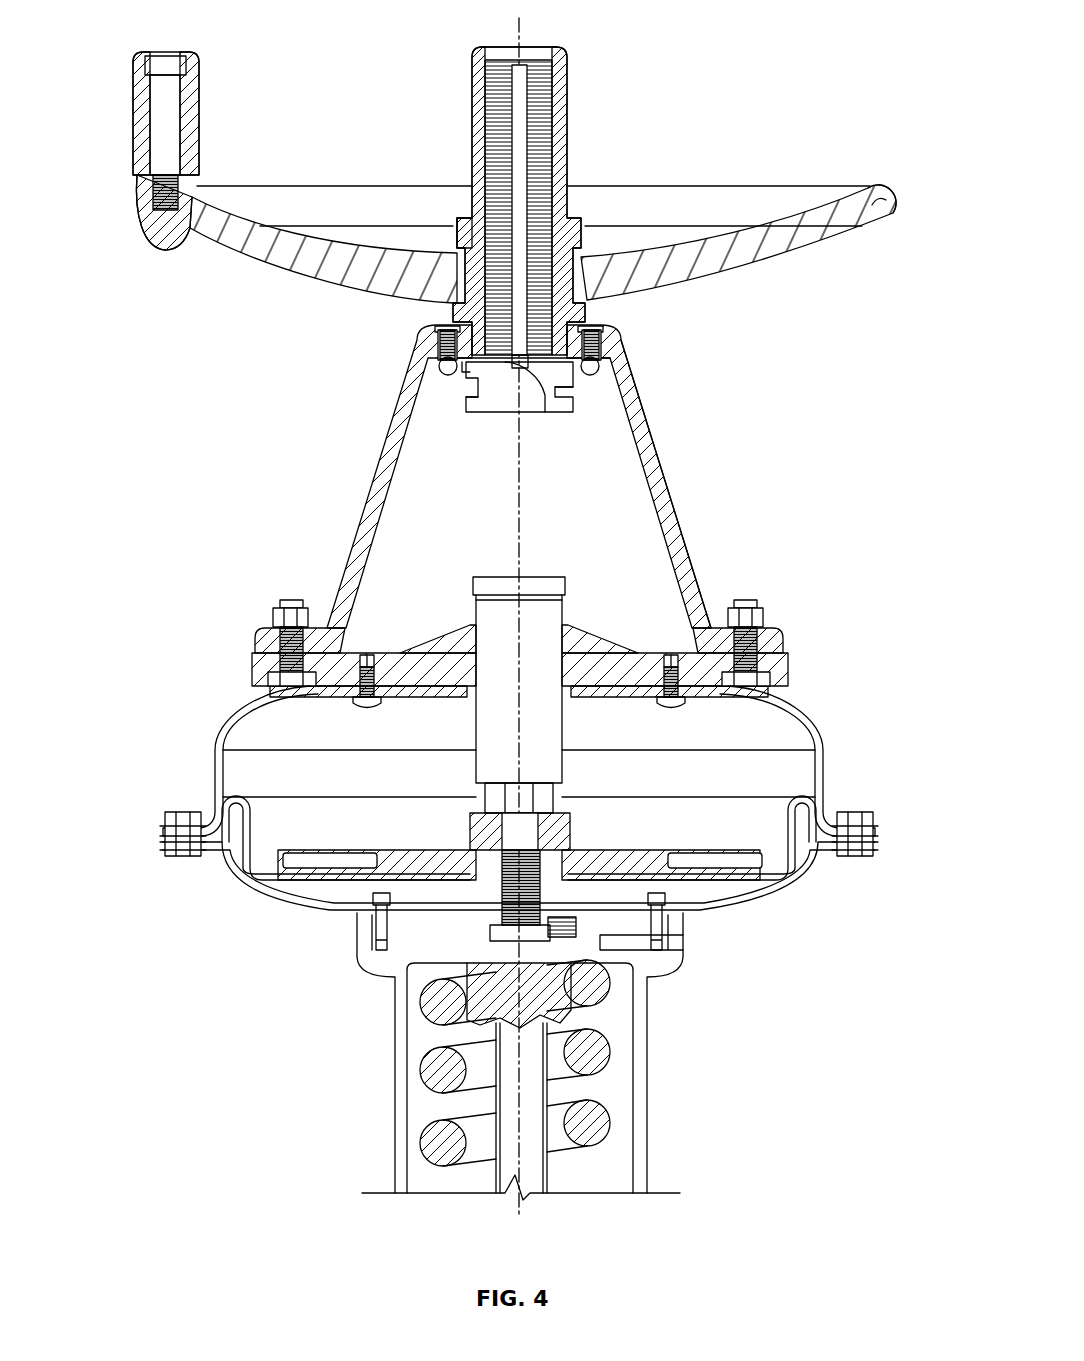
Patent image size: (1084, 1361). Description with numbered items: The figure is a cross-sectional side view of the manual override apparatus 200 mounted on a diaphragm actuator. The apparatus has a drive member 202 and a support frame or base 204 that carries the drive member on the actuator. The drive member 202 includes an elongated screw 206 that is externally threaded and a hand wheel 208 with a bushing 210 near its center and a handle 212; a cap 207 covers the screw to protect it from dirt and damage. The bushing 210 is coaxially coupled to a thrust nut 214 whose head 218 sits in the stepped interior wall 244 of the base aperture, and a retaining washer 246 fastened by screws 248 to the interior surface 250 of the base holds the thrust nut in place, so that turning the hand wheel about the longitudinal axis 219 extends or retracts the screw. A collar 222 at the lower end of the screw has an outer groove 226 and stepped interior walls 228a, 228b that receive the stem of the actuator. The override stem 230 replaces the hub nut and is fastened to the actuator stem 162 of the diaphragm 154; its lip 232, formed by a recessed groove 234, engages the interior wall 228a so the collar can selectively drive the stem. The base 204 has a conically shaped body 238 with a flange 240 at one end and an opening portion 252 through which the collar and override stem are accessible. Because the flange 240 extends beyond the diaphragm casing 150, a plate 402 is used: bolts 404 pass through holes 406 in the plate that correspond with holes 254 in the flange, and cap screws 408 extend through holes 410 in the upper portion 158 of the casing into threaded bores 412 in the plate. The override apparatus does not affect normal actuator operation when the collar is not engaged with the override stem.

The manual override apparatus 200 is at (782, 36).
The drive member 202 is at (702, 131).
The support frame or base 204 is at (777, 411).
The elongated screw 206 is at (550, 98).
The cap 207 is at (472, 100).
The hand wheel 208 is at (897, 222).
The bushing 210 is at (463, 245).
The handle 212 is at (133, 138).
The thrust nut 214 is at (590, 272).
The head 218 is at (452, 330).
The longitudinal axis 219 is at (517, 45).
The collar 222 is at (615, 408).
The groove 226 is at (605, 415).
The stepped interior wall 228a is at (540, 400).
The stepped interior wall 228b is at (470, 403).
The override stem 230 is at (568, 770).
The lip 232 is at (566, 575).
The recessed groove 234 is at (567, 600).
The conically shaped body 238 is at (690, 522).
The flange 240 is at (265, 635).
The stepped interior wall 244 is at (607, 362).
The retaining washer 246 is at (468, 372).
The screws 248 is at (433, 357).
The interior surface 250 is at (420, 380).
The opening portion 252 is at (519, 476).
The holes 254 is at (285, 660).
The upper portion 158 is at (828, 770).
The diaphragm casing 150 is at (233, 880).
The diaphragm 154 is at (775, 855).
The stem 162 is at (497, 1095).
The plate 402 is at (790, 665).
The bolts 404 is at (290, 600).
The holes 406 is at (268, 682).
The cap screws 408 is at (365, 706).
The holes 410 is at (385, 692).
The threaded bores 412 is at (367, 660).